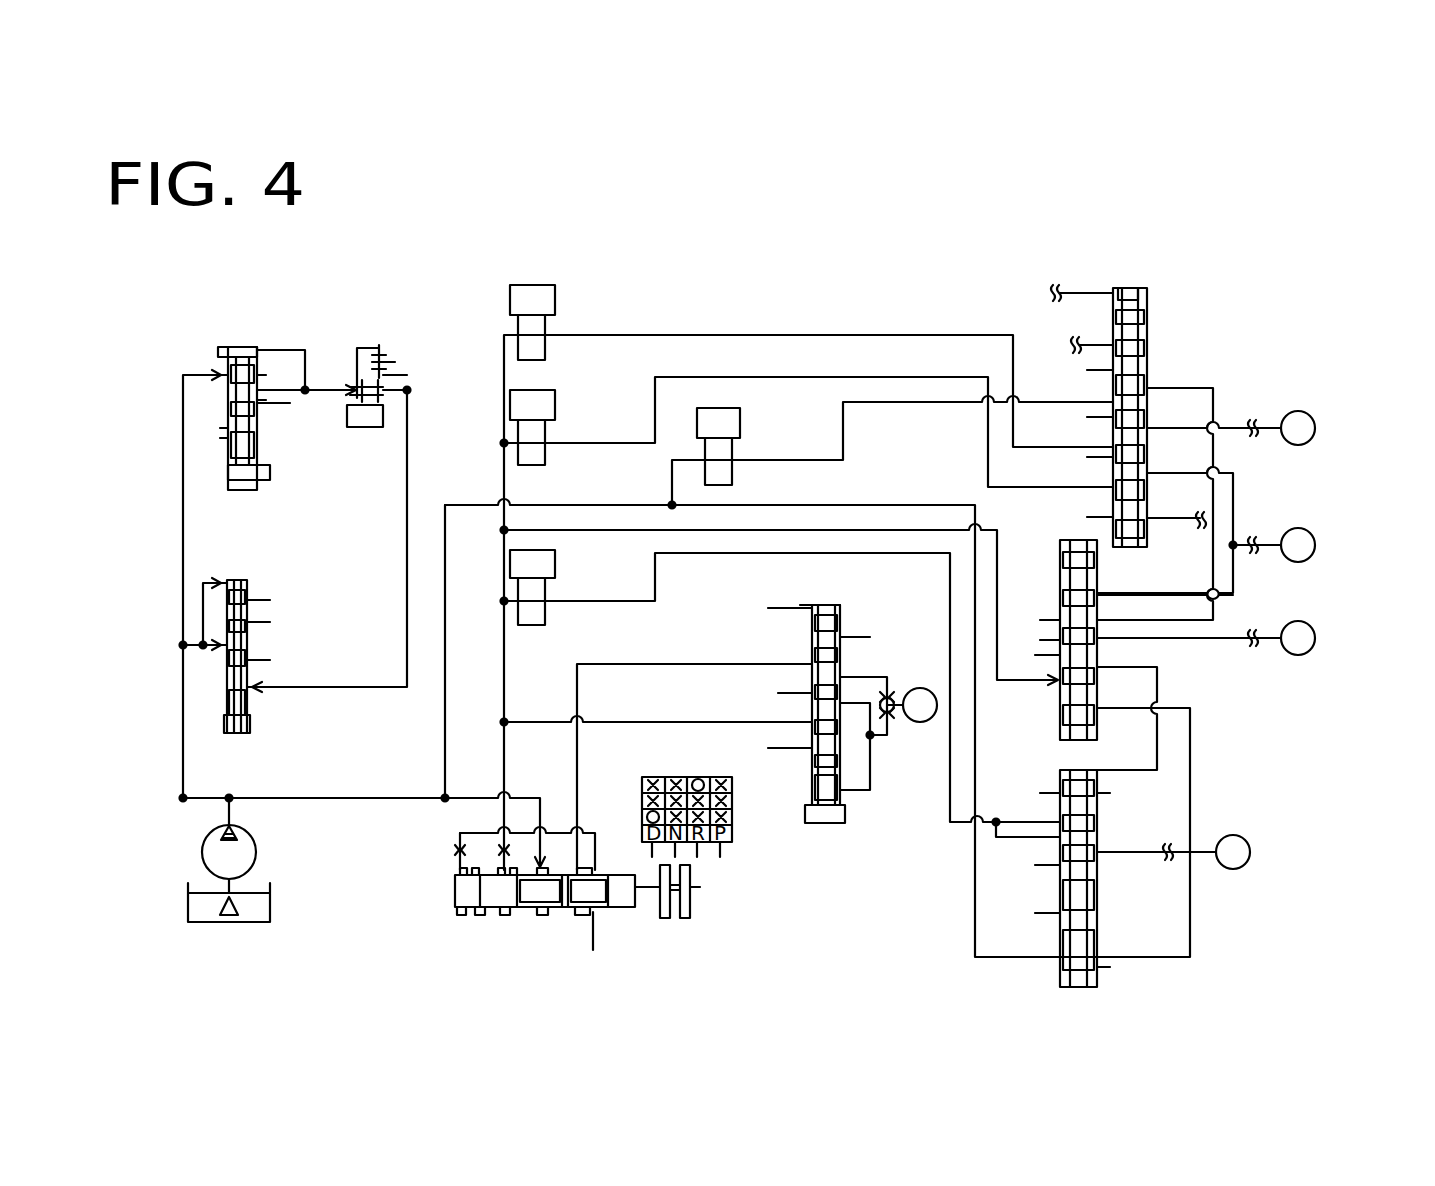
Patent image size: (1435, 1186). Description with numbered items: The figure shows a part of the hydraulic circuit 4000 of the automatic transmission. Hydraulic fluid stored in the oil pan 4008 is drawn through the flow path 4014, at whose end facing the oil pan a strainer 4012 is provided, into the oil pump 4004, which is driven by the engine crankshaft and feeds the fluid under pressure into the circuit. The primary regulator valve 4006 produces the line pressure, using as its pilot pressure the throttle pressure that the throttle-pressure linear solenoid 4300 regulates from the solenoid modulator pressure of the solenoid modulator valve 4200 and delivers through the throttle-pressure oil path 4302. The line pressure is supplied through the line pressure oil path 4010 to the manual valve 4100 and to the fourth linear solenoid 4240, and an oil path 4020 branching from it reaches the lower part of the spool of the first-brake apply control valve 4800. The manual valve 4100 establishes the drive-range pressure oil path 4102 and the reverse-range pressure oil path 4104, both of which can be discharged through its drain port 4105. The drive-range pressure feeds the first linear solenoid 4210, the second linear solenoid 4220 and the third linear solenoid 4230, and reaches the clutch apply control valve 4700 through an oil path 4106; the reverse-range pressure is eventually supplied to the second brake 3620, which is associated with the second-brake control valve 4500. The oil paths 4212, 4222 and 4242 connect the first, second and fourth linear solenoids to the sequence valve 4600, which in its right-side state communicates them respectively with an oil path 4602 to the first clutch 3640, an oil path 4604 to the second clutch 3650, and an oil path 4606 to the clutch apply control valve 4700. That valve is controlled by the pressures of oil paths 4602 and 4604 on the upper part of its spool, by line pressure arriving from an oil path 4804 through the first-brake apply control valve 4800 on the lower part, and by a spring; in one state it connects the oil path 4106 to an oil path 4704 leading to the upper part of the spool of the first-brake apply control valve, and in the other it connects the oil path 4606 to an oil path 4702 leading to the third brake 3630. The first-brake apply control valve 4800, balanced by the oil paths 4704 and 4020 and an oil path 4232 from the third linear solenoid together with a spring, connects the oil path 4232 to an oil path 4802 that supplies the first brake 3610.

The hydraulic circuit 4000 is at (460, 256).
The oil pump 4004 is at (258, 838).
The primary regulator valve 4006 is at (234, 737).
The oil pan 4008 is at (274, 906).
The line pressure oil path 4010 is at (345, 796).
The strainer 4012 is at (232, 928).
The flow path 4014 is at (236, 886).
The oil path 4020 is at (976, 930).
The manual valve 4100 is at (459, 922).
The D-range pressure oil path 4102 is at (508, 695).
The R-range pressure oil path 4104 is at (598, 665).
The drain port 4105 is at (608, 915).
The oil path 4106 is at (942, 528).
The solenoid modulator valve 4200 is at (242, 505).
The SL1 linear solenoid 4210 is at (558, 300).
The oil path 4212 is at (800, 333).
The SL2 linear solenoid 4220 is at (558, 410).
The oil path 4222 is at (702, 377).
The SL3 linear solenoid 4230 is at (558, 568).
The oil path 4232 is at (700, 556).
The SL4 linear solenoid 4240 is at (742, 428).
The oil path 4242 is at (888, 403).
The SLT linear solenoid 4300 is at (365, 430).
The SLT oil path 4302 is at (406, 531).
The B2 control valve 4500 is at (860, 610).
The sequence valve 4600 is at (1173, 318).
The oil path 4602 is at (1232, 428).
The oil path 4604 is at (1237, 491).
The oil path 4606 is at (1172, 388).
The clutch apply control valve 4700 is at (1048, 694).
The oil path 4702 is at (1237, 650).
The oil path 4704 is at (1160, 690).
The B1 apply control valve 4800 is at (1048, 808).
The oil path 4802 is at (1126, 861).
The oil path 4804 is at (1193, 918).
The B1 brake 3610 is at (1233, 833).
The B2 brake 3620 is at (918, 724).
The B3 brake 3630 is at (1297, 621).
The C1 clutch 3640 is at (1297, 411).
The C2 clutch 3650 is at (1297, 528).